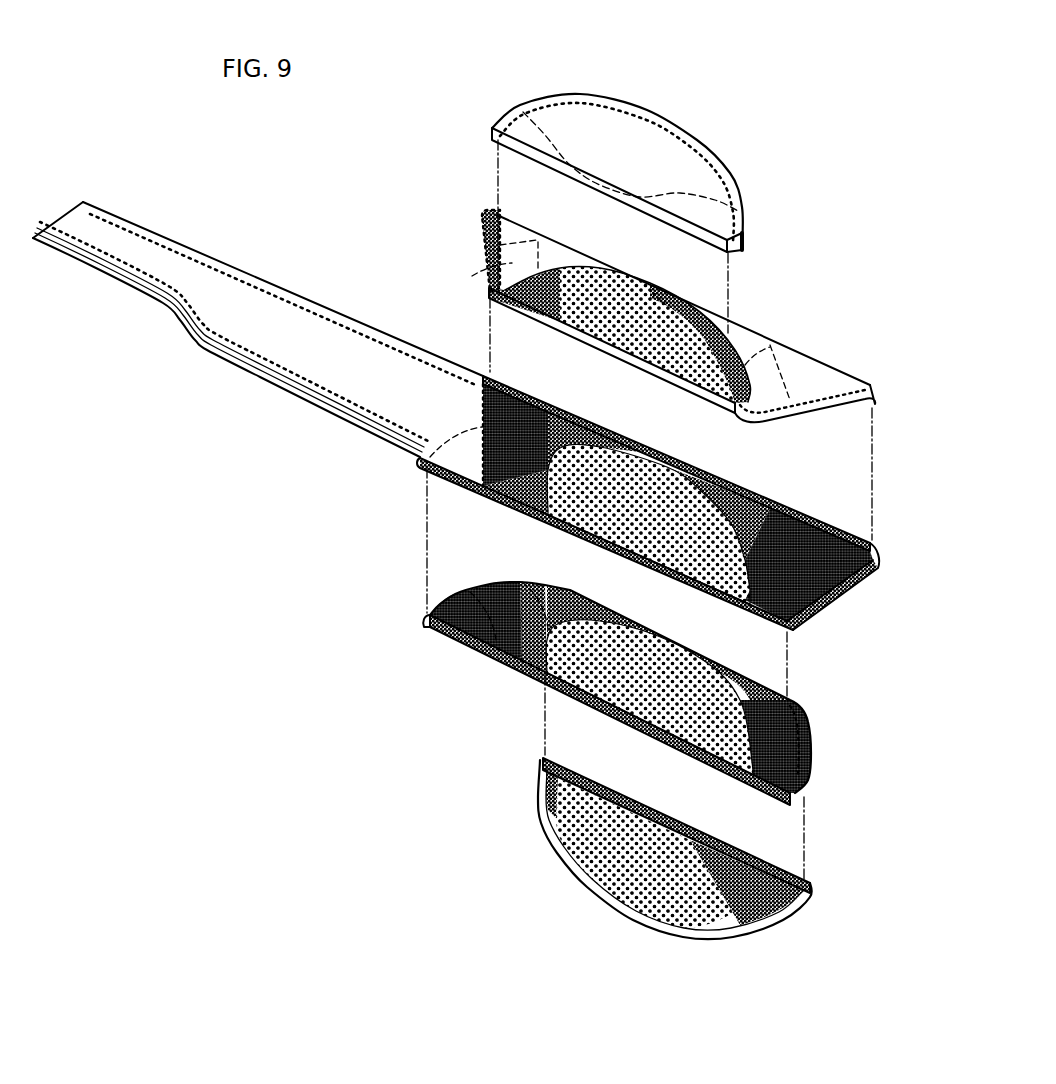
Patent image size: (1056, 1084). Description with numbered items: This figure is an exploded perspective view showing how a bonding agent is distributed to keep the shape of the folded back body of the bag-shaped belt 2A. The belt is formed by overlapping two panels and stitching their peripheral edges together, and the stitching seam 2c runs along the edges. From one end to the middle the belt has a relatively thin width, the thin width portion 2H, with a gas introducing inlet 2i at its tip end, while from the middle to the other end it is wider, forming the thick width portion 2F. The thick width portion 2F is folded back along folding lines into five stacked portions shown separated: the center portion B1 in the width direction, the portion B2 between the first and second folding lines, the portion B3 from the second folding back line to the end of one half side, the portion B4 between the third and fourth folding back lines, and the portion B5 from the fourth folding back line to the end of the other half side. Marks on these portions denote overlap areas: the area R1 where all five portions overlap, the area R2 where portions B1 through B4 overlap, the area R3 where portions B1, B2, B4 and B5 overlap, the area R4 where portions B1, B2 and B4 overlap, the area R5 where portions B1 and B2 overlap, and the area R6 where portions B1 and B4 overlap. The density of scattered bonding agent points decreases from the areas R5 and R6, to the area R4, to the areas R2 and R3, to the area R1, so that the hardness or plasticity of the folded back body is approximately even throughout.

The bag-shaped belt 2A is at (250, 598).
The gas introducing inlet 2i is at (57, 217).
The stitching seam 2c is at (170, 241).
The thin width portion 2H is at (254, 348).
The thick width portion 2F is at (935, 927).
The center portion B1 is at (850, 604).
The portion between first and second folding lines B2 is at (455, 247).
The portion from second folding back line to one end B3 is at (470, 103).
The portion between third and fourth folding back lines B4 is at (403, 642).
The portion from fourth folding back line to other end B5 is at (517, 857).
The five-portion overlap area R1 is at (653, 147).
The four-portion overlap area R2 is at (522, 112).
The four-portion overlap area R3 is at (550, 257).
The three-portion overlap area R4 is at (510, 263).
The two-portion overlap area R5 is at (507, 232).
The two-portion overlap area R6 is at (432, 480).